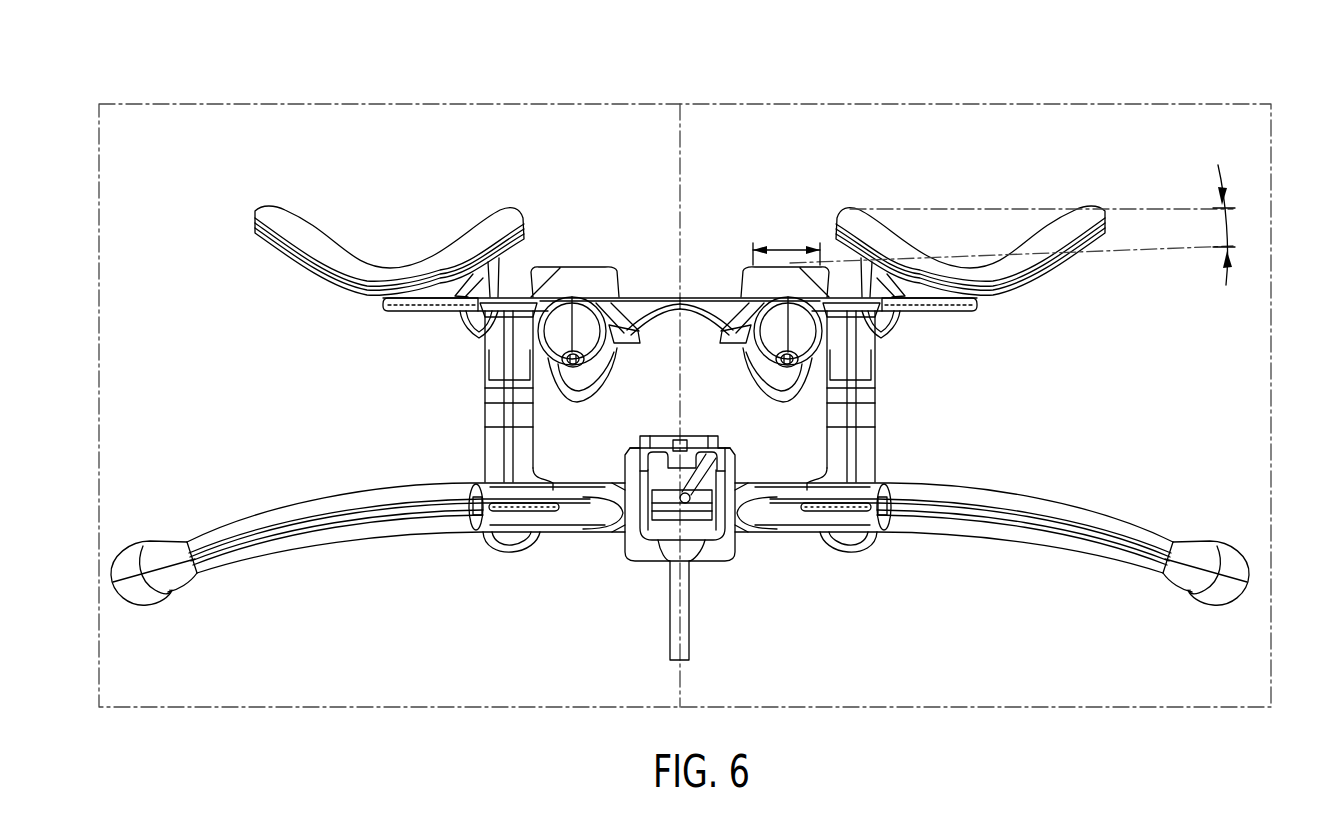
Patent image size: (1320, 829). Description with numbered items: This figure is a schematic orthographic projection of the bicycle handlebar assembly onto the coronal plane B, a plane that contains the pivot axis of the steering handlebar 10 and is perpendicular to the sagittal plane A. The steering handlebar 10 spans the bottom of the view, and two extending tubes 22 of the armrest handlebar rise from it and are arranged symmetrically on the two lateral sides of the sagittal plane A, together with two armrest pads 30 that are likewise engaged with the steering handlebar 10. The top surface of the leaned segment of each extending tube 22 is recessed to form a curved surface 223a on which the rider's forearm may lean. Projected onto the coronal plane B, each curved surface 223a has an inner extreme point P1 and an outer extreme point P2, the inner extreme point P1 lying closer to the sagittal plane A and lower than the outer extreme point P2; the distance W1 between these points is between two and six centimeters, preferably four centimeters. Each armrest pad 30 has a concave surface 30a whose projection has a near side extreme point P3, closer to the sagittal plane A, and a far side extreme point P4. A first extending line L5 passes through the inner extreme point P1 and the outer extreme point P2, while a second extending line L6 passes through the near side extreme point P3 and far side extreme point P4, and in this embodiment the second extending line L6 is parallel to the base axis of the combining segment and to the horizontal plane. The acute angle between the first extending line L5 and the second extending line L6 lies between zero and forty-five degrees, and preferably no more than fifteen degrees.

The steering handlebar 10 is at (1088, 509).
The extending tube 22 is at (725, 290).
The curved surface 223a is at (887, 330).
The armrest pad 30 is at (1032, 296).
The concave surface 30a is at (903, 242).
The sagittal plane A is at (680, 684).
The coronal plane B is at (465, 104).
The inner extreme point P1 is at (749, 267).
The outer extreme point P2 is at (826, 267).
The near side extreme point P3 is at (838, 217).
The far side extreme point P4 is at (1090, 208).
The first extending line L5 is at (1137, 250).
The second extending line L6 is at (1123, 209).
The distance W1 is at (786, 241).